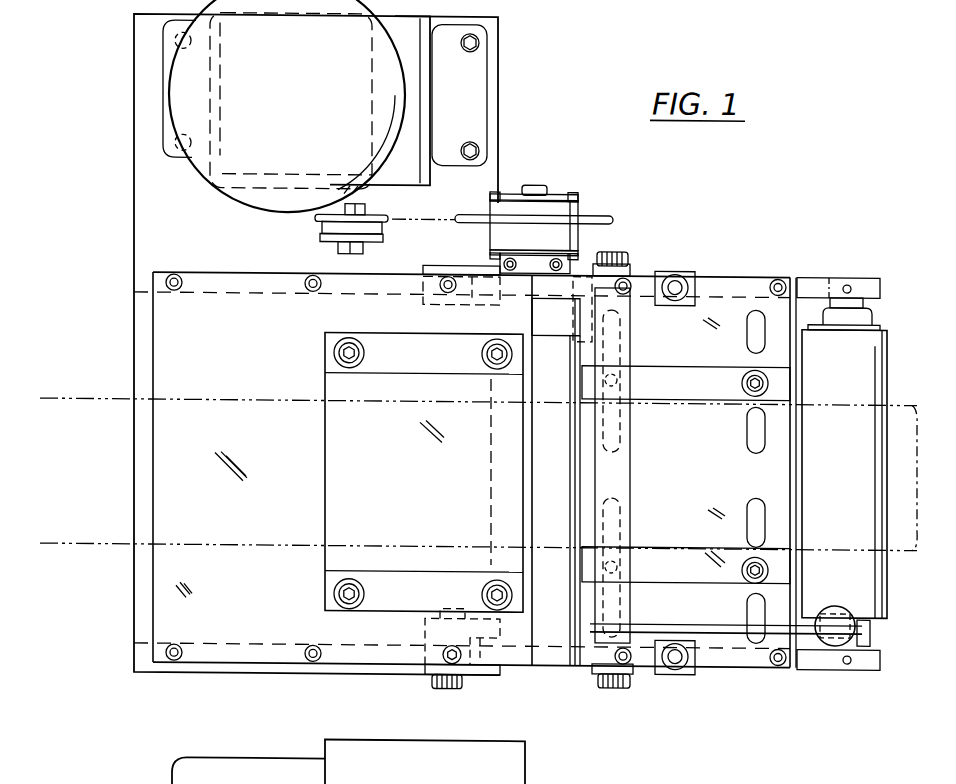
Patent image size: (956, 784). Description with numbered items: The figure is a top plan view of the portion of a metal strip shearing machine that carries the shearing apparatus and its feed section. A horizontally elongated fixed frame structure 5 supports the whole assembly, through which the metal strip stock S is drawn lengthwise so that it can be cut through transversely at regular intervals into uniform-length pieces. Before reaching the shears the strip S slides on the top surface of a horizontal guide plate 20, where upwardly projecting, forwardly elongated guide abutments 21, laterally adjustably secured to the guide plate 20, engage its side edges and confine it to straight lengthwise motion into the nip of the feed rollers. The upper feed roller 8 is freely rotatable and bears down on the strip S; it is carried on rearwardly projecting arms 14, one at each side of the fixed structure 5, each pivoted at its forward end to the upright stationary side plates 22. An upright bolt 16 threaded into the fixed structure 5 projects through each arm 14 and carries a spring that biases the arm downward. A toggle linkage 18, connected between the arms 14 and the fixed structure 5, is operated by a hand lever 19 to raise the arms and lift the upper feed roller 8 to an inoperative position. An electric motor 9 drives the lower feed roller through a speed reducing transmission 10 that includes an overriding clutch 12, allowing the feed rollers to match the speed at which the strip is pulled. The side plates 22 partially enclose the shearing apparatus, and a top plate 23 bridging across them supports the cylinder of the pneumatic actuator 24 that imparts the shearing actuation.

The fixed frame structure 5 is at (133, 298).
The upper feed roller 8 is at (584, 480).
The electric motor 9 is at (405, 97).
The speed reducing transmission 10 is at (428, 137).
The overriding clutch 12 is at (580, 208).
The rearwardly projecting arms 14 is at (645, 272).
The upright bolt 16 is at (680, 280).
The toggle linkage 18 is at (600, 672).
The hand lever 19 is at (722, 628).
The horizontal guide plate 20 is at (733, 492).
The guide abutments 21 is at (686, 395).
The upright stationary side plates 22 is at (150, 266).
The top plate 23 is at (170, 590).
The pneumatic actuator 24 is at (428, 487).
The metal strip stock S is at (102, 398).